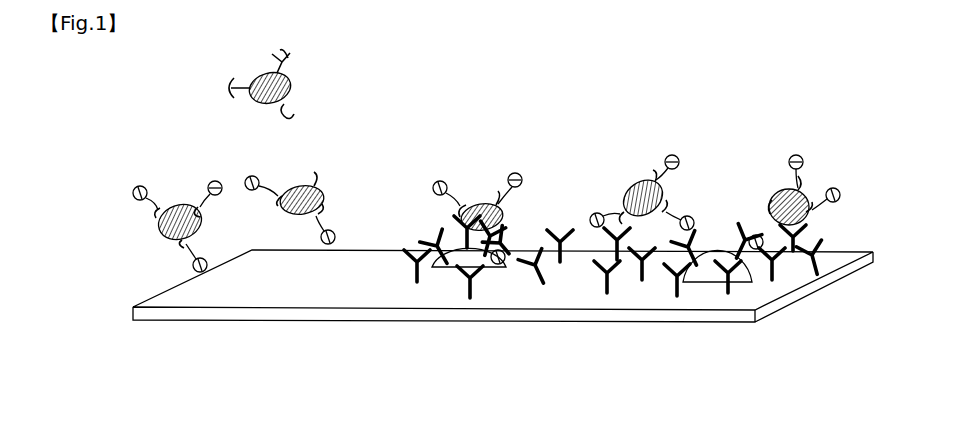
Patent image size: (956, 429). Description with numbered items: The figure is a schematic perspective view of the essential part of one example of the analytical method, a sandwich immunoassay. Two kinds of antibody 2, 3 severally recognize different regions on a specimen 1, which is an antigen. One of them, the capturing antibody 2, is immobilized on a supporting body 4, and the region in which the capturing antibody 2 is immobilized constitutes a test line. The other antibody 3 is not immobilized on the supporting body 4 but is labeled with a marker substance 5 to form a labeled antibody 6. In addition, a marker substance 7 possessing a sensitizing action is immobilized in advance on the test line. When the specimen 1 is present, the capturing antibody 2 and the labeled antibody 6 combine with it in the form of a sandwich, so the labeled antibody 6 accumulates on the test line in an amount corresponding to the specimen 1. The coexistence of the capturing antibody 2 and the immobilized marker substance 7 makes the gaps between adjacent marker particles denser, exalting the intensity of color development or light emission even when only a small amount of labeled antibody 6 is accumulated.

The specimen 1 is at (135, 190).
The capturing antibody 2 is at (462, 295).
The antibody 3 is at (268, 67).
The supporting body 4 is at (278, 295).
The marker substance 5 is at (252, 102).
The labeled antibody 6 is at (462, 164).
The marker substance 7 is at (457, 243).